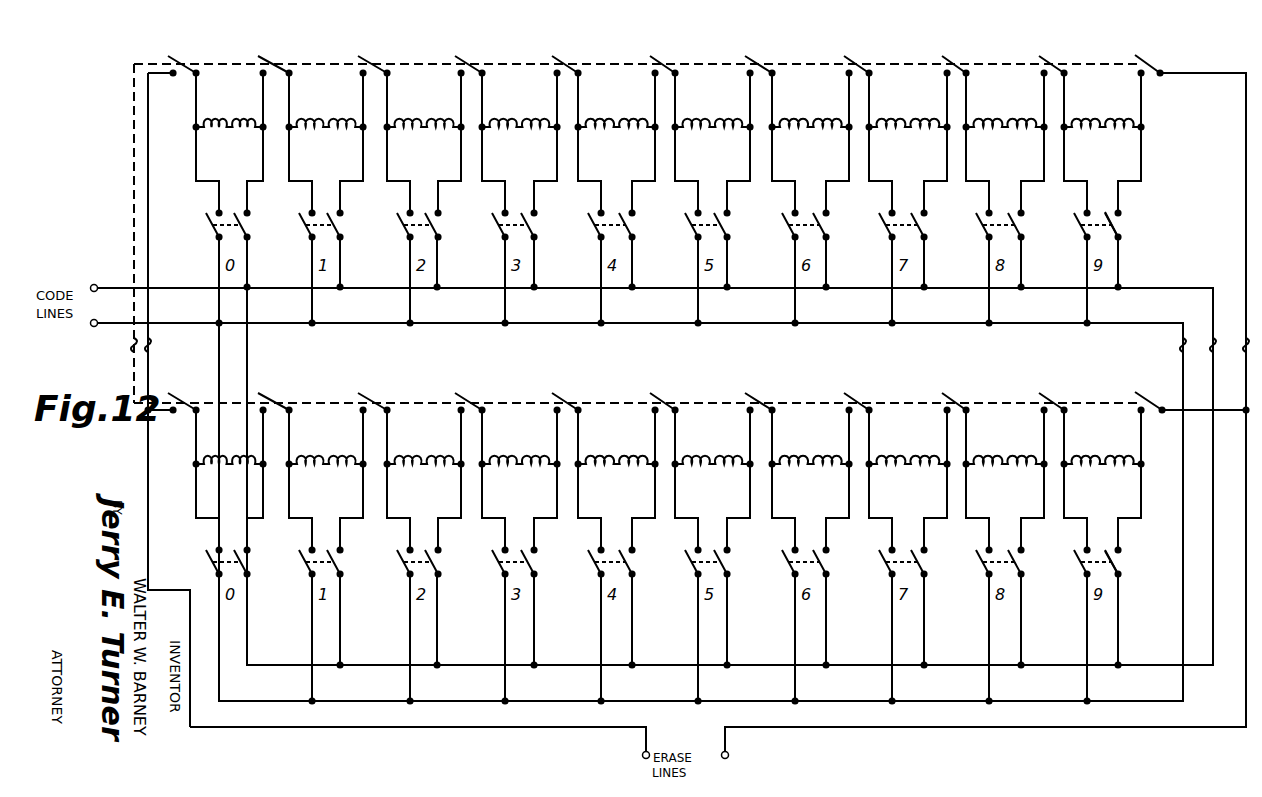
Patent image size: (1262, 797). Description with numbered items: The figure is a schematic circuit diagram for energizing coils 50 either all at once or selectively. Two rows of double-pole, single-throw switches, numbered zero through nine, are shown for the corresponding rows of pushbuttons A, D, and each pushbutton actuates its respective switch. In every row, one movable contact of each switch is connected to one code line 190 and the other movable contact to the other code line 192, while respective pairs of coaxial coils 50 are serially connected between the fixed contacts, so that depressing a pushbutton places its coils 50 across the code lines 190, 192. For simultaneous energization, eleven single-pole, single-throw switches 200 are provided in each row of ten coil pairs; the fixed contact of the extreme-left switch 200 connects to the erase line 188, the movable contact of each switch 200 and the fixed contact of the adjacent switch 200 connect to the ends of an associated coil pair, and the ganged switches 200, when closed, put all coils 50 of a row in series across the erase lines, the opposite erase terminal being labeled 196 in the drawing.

The single-pole, single-throw switch 200 is at (616, 211).
The coil 50 is at (668, 387).
The code line 190 is at (121, 275).
The code line 192 is at (104, 330).
The erase line 188 is at (639, 748).
The erase line 196 is at (735, 748).
The row of pushbuttons A is at (1130, 222).
The row of pushbuttons D is at (1122, 561).